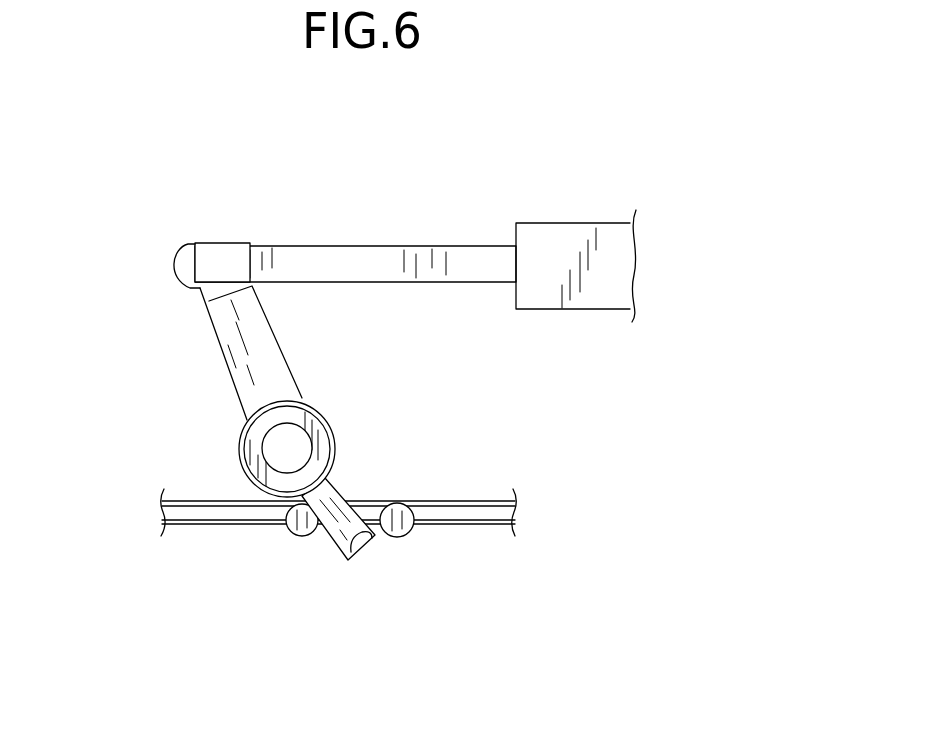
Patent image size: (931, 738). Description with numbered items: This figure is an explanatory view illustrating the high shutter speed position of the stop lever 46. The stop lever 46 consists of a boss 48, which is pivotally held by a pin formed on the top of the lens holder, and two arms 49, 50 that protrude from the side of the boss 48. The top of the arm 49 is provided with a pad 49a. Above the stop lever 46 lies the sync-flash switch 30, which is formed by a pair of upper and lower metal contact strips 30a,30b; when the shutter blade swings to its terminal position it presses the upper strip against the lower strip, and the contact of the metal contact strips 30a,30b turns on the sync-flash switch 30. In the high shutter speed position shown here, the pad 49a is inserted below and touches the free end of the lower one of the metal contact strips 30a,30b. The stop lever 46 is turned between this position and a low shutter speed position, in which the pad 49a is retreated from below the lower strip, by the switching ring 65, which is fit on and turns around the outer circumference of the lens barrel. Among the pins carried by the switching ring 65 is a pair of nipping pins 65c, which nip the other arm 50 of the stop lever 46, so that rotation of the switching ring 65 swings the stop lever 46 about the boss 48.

The sync-flash switch 30 is at (553, 203).
The upper and lower metal contact strips 30a,30b is at (323, 257).
The pad 49a is at (190, 243).
The arm 49 is at (233, 340).
The stop lever 46 is at (333, 398).
The boss 48 is at (250, 448).
The arm 50 is at (342, 499).
The switching ring 65 is at (492, 535).
The nipping pins 65c is at (408, 537).